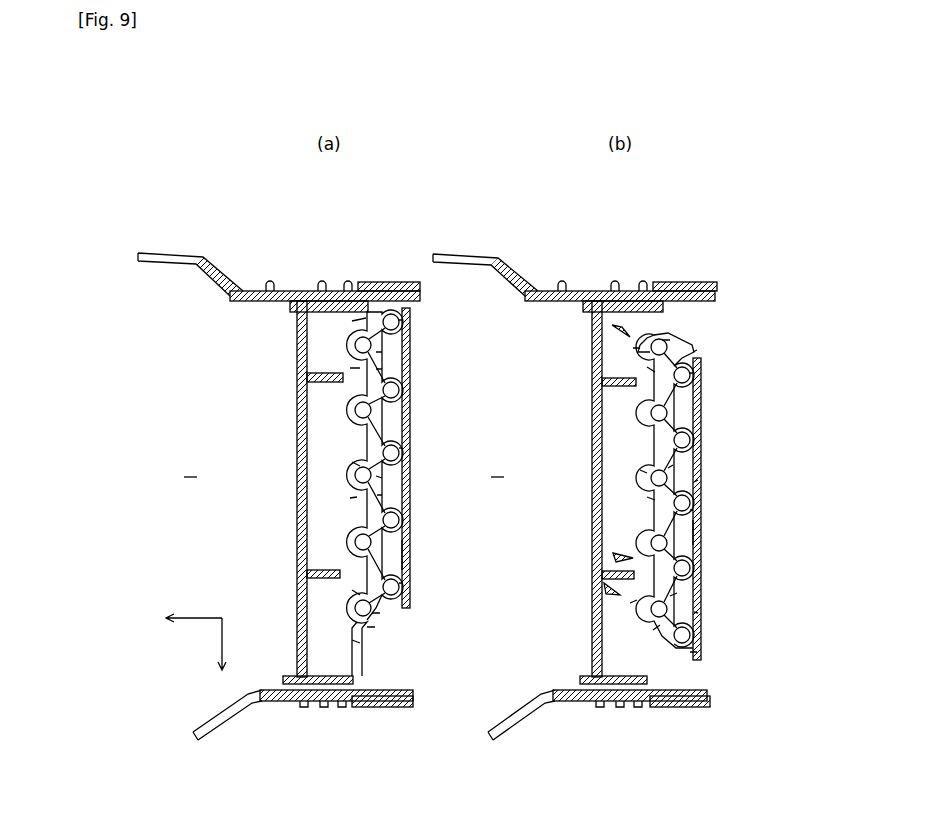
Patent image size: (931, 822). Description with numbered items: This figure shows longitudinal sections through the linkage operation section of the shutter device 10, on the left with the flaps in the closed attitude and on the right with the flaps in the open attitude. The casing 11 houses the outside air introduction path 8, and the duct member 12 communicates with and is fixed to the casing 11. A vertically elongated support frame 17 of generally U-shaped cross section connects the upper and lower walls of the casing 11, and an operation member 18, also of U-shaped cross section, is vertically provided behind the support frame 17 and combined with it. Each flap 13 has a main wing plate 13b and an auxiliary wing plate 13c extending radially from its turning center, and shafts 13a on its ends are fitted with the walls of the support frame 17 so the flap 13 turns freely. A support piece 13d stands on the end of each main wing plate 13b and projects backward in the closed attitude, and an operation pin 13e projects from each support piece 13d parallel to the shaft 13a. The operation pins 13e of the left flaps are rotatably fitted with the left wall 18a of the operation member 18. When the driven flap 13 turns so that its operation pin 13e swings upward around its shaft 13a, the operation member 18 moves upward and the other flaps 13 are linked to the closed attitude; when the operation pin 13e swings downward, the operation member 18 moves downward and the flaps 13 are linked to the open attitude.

The outside air introduction path 8 is at (298, 575).
The shutter device 10 is at (402, 250).
The casing 11 is at (372, 282).
The duct member 12 is at (241, 712).
The flap 13 is at (335, 352).
The shaft 13a is at (376, 369).
The main wing plate 13b is at (366, 318).
The auxiliary wing plate 13c is at (360, 368).
The support piece 13d is at (402, 352).
The operation pin 13e is at (401, 320).
The support frame 17 is at (290, 578).
The operation member 18 is at (421, 419).
The left wall of operation member 18a is at (393, 553).